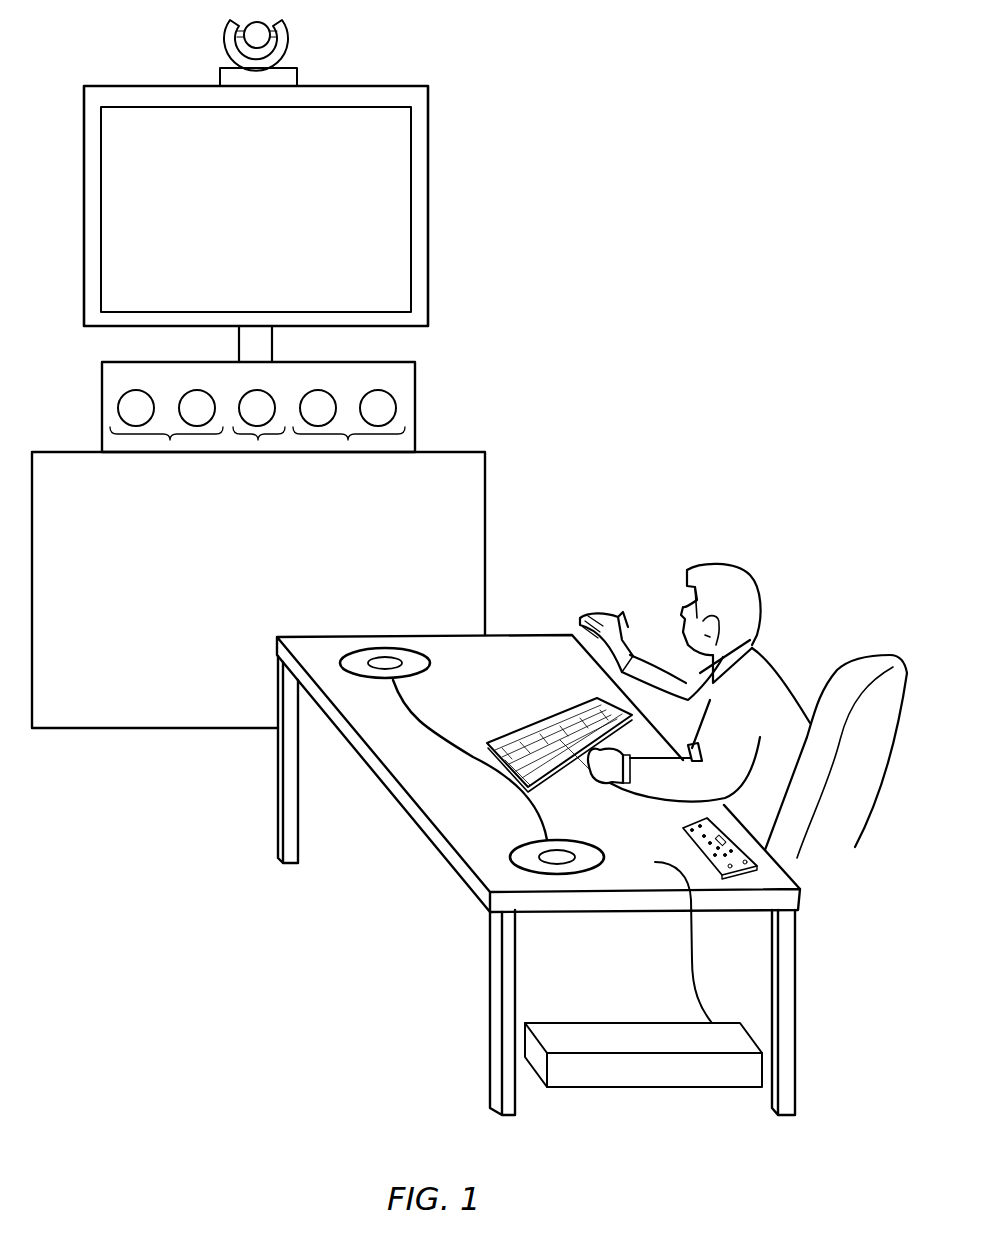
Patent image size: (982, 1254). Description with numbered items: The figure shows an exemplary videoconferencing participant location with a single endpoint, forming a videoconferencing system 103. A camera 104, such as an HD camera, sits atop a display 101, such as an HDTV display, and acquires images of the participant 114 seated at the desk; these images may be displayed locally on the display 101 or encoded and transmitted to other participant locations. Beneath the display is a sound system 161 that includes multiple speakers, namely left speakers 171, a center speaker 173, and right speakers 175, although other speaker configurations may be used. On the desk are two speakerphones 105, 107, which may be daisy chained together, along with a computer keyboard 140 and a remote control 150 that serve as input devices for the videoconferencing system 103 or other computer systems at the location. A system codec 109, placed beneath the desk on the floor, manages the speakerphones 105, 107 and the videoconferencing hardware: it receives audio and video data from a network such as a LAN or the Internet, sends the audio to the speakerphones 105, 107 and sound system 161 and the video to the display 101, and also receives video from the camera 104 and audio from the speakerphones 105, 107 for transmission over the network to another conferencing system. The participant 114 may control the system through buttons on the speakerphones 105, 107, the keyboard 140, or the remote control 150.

The display 101 is at (256, 206).
The videoconferencing system 103 is at (559, 90).
The camera 104 is at (292, 34).
The speakerphone 105 is at (524, 838).
The speakerphone 107 is at (430, 663).
The system codec 109 is at (668, 1088).
The participant 114 is at (745, 578).
The computer keyboard 140 is at (550, 717).
The remote control 150 is at (683, 823).
The sound system 161 is at (415, 380).
The left speakers 171 is at (170, 440).
The center speaker 173 is at (258, 440).
The right speakers 175 is at (348, 440).